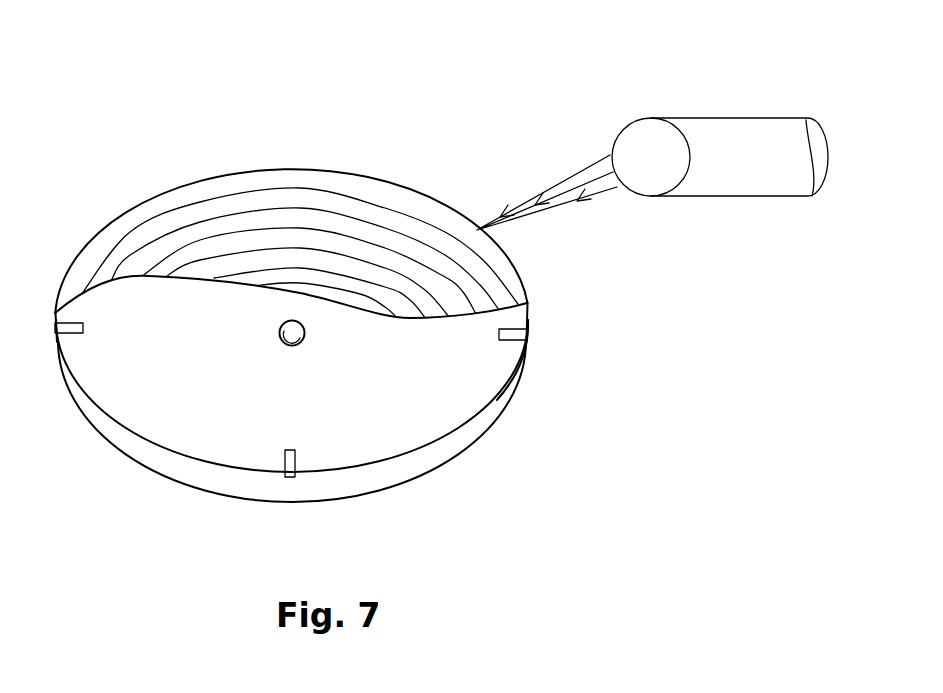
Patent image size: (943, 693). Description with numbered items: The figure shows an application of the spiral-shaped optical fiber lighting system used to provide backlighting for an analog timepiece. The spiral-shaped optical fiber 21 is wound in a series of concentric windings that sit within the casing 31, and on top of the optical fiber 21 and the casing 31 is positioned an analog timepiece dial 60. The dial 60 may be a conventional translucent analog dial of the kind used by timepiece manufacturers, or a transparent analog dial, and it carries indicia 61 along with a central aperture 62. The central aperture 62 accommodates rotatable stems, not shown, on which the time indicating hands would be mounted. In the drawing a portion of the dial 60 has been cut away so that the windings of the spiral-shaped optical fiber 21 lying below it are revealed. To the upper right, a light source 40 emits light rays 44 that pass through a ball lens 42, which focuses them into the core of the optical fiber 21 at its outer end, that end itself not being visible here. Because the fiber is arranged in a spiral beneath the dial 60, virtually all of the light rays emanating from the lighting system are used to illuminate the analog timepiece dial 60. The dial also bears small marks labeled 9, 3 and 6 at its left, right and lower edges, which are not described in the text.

The spiral-shaped optical fiber 21 is at (137, 225).
The analog timepiece dial 60 is at (153, 380).
The casing 31 is at (468, 436).
The indicia 61 is at (493, 345).
The left slot 9 is at (80, 329).
The right slot 3 is at (503, 335).
The front slot 6 is at (289, 449).
The central aperture 62 is at (299, 345).
The light source 40 is at (770, 138).
The ball lens 42 is at (650, 137).
The light rays 44 is at (538, 195).